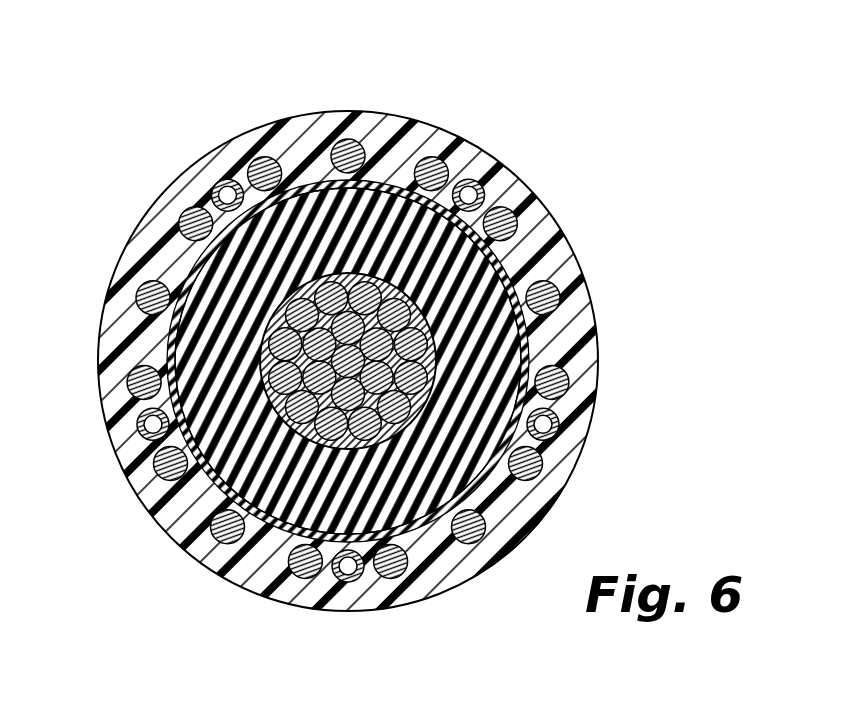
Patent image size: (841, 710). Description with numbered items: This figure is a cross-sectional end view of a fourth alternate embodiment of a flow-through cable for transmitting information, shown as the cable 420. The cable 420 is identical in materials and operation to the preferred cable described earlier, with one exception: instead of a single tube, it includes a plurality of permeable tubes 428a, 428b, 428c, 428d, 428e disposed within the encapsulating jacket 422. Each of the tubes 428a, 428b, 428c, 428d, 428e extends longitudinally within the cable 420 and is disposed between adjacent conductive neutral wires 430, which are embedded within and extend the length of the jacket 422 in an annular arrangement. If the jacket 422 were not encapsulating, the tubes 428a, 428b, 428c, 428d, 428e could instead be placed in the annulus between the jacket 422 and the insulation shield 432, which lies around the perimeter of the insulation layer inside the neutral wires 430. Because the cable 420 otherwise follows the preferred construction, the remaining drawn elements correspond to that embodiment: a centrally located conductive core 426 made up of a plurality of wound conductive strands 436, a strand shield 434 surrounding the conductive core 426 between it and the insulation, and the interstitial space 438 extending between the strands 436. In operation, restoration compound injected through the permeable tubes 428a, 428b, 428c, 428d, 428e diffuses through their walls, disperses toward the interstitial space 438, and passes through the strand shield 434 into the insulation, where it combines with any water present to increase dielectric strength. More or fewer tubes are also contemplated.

The cable 420 is at (542, 160).
The jacket 422 is at (566, 254).
The inner insulation layer 426 is at (440, 309).
The permeable tube 428a is at (216, 186).
The permeable tube 428b is at (464, 181).
The permeable tube 428c is at (562, 416).
The permeable tube 428d is at (346, 582).
The permeable tube 428e is at (140, 427).
The conductive neutral wires 430 is at (148, 286).
The insulation shield 432 is at (313, 172).
The conductor strands 434 is at (387, 442).
The core 436 is at (262, 338).
The inner jacket 438 is at (268, 470).